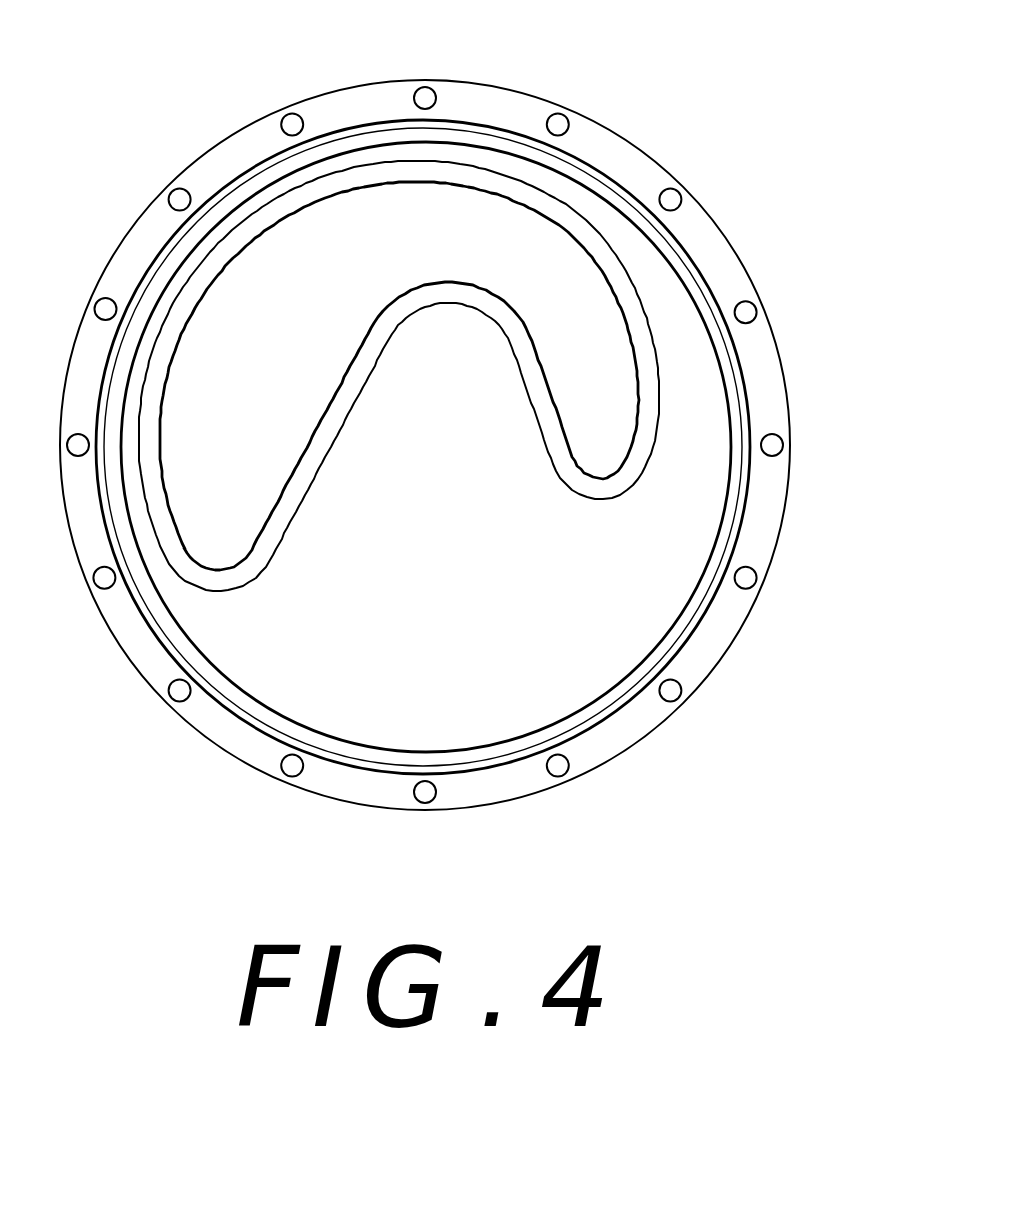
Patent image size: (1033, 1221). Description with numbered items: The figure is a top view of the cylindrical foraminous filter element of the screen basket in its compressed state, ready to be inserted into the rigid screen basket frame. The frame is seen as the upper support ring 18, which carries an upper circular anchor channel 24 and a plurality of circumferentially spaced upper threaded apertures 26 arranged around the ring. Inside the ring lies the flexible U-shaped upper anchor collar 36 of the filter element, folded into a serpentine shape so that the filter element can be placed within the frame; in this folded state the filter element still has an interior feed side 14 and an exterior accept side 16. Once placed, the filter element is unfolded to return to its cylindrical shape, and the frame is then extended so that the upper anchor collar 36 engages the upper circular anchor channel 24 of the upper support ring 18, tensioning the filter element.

The interior feed side 14 is at (406, 645).
The exterior accept side 16 is at (793, 735).
The upper support ring 18 is at (780, 386).
The upper circular anchor channel 24 is at (346, 128).
The upper threaded apertures 26 is at (566, 122).
The upper anchor collar 36 is at (555, 455).